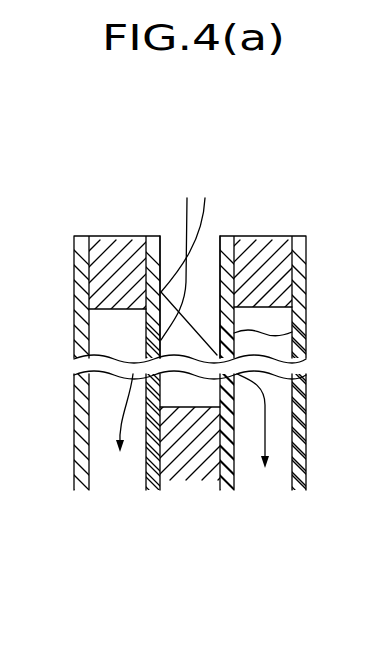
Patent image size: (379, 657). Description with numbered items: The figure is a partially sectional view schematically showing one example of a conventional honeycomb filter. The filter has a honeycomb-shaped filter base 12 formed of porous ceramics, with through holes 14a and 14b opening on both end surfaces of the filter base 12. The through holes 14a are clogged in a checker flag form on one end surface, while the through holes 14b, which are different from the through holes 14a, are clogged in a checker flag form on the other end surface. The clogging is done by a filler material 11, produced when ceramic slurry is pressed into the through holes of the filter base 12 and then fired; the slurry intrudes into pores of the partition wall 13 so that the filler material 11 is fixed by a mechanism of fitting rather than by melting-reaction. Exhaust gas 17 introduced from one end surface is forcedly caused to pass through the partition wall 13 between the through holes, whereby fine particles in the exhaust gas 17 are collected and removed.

The filler material 11 is at (113, 264).
The filter base 12 is at (74, 398).
The partition wall 13 is at (303, 341).
The through holes 14a is at (211, 250).
The through holes 14b is at (97, 322).
The exhaust gas 17 is at (192, 312).